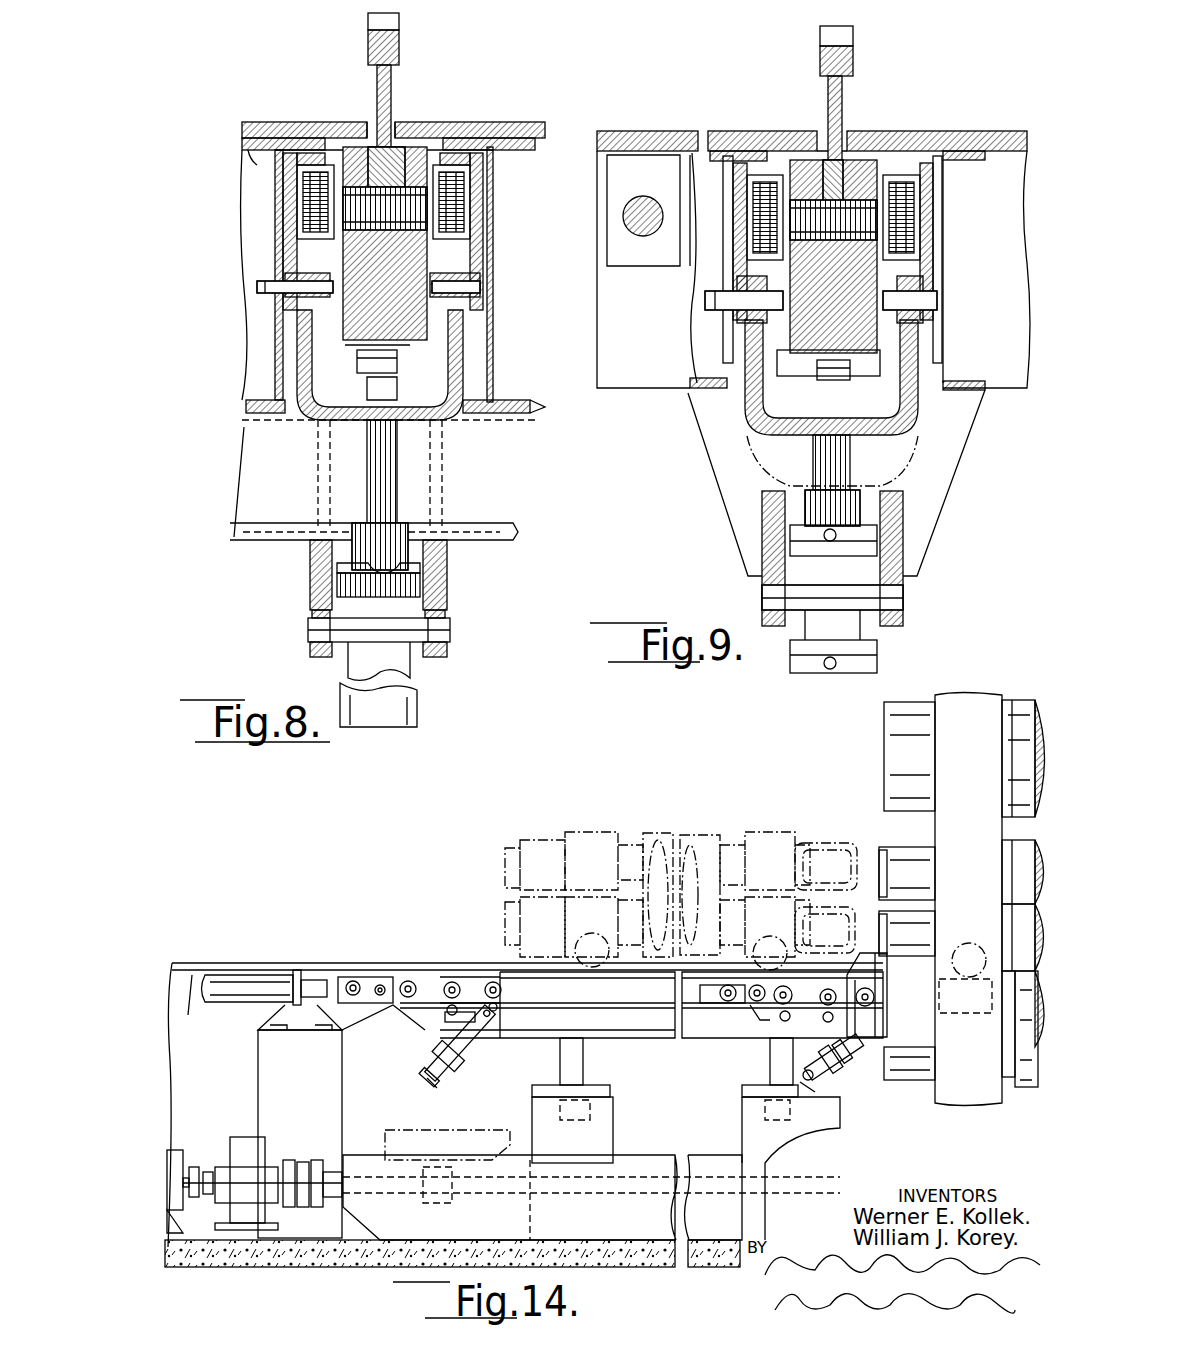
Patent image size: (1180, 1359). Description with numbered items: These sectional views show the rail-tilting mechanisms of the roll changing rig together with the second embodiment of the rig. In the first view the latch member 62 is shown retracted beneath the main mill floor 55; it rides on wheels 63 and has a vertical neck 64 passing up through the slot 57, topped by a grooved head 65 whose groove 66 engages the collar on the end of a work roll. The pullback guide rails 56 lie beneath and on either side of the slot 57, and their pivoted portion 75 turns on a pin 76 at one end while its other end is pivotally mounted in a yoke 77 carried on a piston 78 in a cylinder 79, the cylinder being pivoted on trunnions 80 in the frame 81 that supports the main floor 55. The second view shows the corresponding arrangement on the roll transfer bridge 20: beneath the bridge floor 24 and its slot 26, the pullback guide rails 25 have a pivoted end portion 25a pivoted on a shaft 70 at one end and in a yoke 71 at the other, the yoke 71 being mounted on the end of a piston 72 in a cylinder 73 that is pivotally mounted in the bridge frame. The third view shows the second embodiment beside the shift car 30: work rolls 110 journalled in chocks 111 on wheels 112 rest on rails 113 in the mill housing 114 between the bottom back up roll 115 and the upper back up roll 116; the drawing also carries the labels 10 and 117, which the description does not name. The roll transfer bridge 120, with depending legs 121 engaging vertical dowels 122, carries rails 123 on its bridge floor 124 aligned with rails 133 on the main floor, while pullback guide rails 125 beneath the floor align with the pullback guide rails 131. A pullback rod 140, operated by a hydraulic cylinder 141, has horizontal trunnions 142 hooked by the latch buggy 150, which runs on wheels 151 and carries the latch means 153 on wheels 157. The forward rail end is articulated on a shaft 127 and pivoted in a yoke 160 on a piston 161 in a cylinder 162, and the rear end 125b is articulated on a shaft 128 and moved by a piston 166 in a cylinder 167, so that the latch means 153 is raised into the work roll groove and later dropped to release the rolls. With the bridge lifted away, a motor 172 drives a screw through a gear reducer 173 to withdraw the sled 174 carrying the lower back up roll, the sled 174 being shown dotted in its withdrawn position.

In FIG. 8, the groove 66 is at (392, 22).
In FIG. 9, the groove 66 is at (845, 33).
In FIG. 8, the grooved head 65 is at (392, 58).
In FIG. 9, the grooved head 65 is at (847, 68).
In FIG. 8, the vertical neck 64 is at (377, 88).
In FIG. 9, the vertical neck 64 is at (842, 103).
In FIG. 8, the main mill floor 55 is at (258, 123).
In FIG. 8, the slot 57 is at (370, 128).
In FIG. 8, the latch member 62 is at (390, 163).
In FIG. 9, the latch member 62 is at (837, 173).
In FIG. 8, the pullback guide rails 56 is at (268, 207).
In FIG. 8, the wheels 63 is at (447, 188).
In FIG. 9, the wheels 63 is at (900, 192).
In FIG. 8, the pivoted portion 75 is at (470, 253).
In FIG. 8, the pin 76 is at (478, 292).
In FIG. 8, the yoke 77 is at (458, 350).
In FIG. 8, the cylinder 79 is at (383, 487).
In FIG. 8, the frame 81 is at (403, 603).
In FIG. 8, the trunnions 80 is at (443, 630).
In FIG. 8, the piston 78 is at (400, 660).
In FIG. 9, the bridge floor 24 is at (638, 127).
In FIG. 9, the slot 26 is at (823, 135).
In FIG. 9, the pullback guide rails 25 is at (943, 234).
In FIG. 9, the pivoted end portion 25a is at (928, 265).
In FIG. 9, the shaft 70 is at (937, 293).
In FIG. 9, the yoke 71 is at (910, 348).
In FIG. 9, the roll transfer bridge 20 is at (707, 385).
In FIG. 9, the piston 72 is at (835, 462).
In FIG. 9, the cylinder 73 is at (873, 558).
In FIG. 14, the shift car 30 is at (190, 977).
In FIG. 14, the hydraulic cylinder 141 is at (238, 987).
In FIG. 14, the horizontal trunnions 142 is at (377, 993).
In FIG. 14, the pullback rod 140 is at (320, 983).
In FIG. 14, the pullback guide rails 131 is at (413, 983).
In FIG. 14, the shaft 128 is at (470, 1017).
In FIG. 14, the rails 133 is at (468, 970).
In FIG. 14, the bridge floor 124 is at (627, 973).
In FIG. 14, the pullback guide rails 125 is at (690, 1000).
In FIG. 14, the rear end 125b is at (493, 1023).
In FIG. 14, the wheels 151 is at (783, 997).
In FIG. 14, the wheels 157 is at (871, 1000).
In FIG. 14, the piston 166 is at (450, 1045).
In FIG. 14, the piston 161 is at (470, 1037).
In FIG. 14, the cylinder 167 is at (437, 1080).
In FIG. 14, the yoke 160 is at (830, 1060).
In FIG. 14, the cylinder 162 is at (827, 1087).
In FIG. 14, the depending legs 121 is at (780, 1053).
In FIG. 14, the vertical dowels 122 is at (773, 1108).
In FIG. 14, the shaft 127 is at (815, 1128).
In FIG. 14, the roll transfer bridge 120 is at (423, 1050).
In FIG. 14, the sled 174 is at (443, 1128).
In FIG. 14, the motor 172 is at (170, 1153).
In FIG. 14, the gear reducer 173 is at (240, 1143).
In FIG. 14, the chocks 111 is at (585, 848).
In FIG. 14, the rails 123 is at (623, 972).
In FIG. 14, the workpiece 10 is at (697, 850).
In FIG. 14, the latch means 153 is at (826, 866).
In FIG. 14, the latch buggy 150 is at (770, 990).
In FIG. 14, the wheels 112 is at (573, 933).
In FIG. 14, the mill housing 114 is at (982, 733).
In FIG. 14, the upper back up roll 116 is at (1027, 715).
In FIG. 14, the work rolls 110 is at (1025, 855).
In FIG. 14, the roller 117 is at (1022, 896).
In FIG. 14, the rails 113 is at (965, 1013).
In FIG. 14, the bottom back up roll 115 is at (1029, 1062).